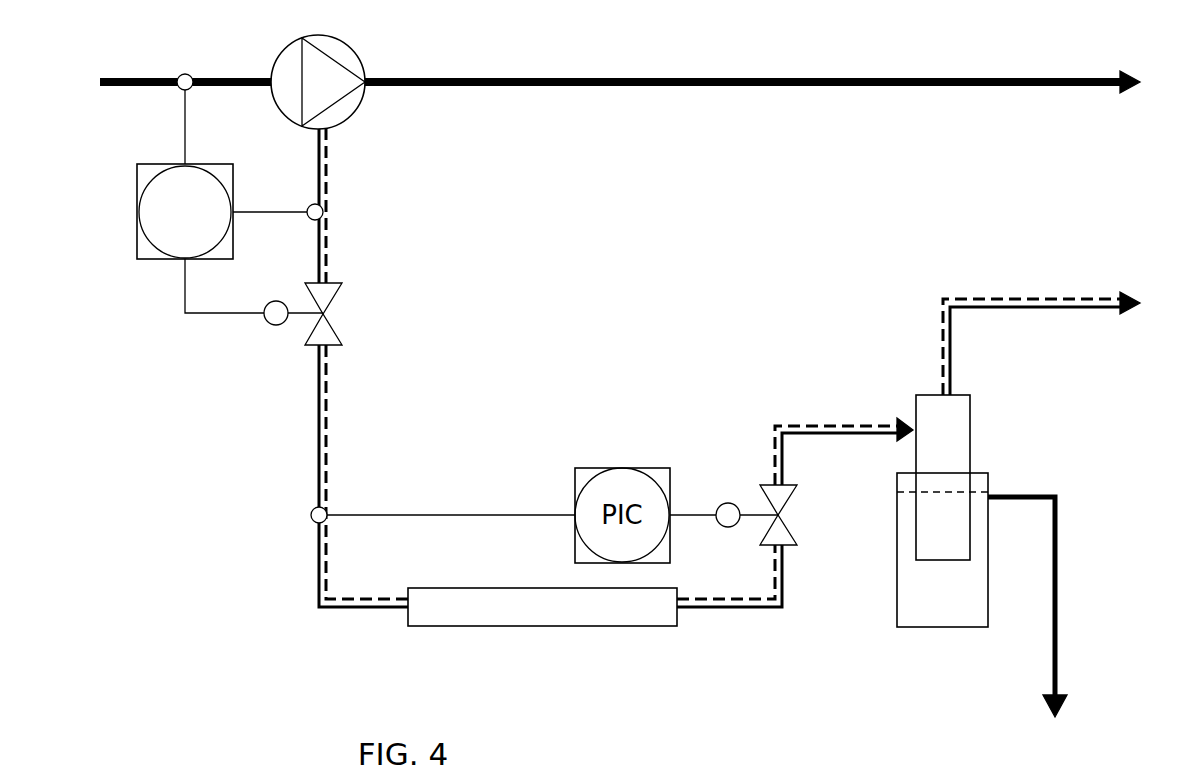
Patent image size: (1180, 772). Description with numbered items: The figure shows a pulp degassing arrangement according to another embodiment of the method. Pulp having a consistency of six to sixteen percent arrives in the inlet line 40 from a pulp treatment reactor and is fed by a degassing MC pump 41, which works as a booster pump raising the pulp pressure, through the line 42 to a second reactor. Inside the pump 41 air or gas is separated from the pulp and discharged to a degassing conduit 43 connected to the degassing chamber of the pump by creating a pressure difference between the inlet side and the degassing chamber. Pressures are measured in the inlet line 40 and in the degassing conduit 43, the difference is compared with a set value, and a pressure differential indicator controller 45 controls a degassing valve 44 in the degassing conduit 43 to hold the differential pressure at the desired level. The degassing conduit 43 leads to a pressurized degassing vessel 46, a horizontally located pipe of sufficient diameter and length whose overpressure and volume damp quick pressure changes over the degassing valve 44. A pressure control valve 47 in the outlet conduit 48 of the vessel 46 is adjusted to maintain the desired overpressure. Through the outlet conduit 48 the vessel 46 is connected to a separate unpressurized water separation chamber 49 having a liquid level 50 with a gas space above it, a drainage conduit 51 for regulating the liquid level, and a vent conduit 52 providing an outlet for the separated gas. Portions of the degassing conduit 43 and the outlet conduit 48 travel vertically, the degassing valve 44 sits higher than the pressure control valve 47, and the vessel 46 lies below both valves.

The line 40 is at (148, 73).
The degassing MC pump 41 is at (352, 52).
The line 42 is at (627, 75).
The degassing conduit 43 is at (327, 190).
The degassing valve 44 is at (335, 332).
The pressure differential indicator controller 45 is at (137, 203).
The pressurized degassing vessel 46 is at (453, 626).
The pressure control valve 47 is at (788, 532).
The outlet conduit 48 is at (753, 610).
The water separation chamber 49 is at (971, 423).
The liquid level 50 is at (980, 488).
The drainage conduit 51 is at (1058, 548).
The vent conduit 52 is at (1012, 293).